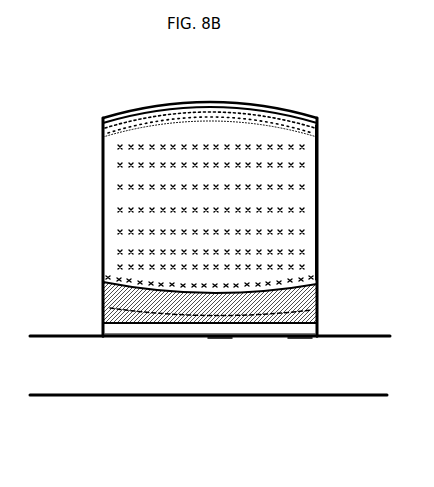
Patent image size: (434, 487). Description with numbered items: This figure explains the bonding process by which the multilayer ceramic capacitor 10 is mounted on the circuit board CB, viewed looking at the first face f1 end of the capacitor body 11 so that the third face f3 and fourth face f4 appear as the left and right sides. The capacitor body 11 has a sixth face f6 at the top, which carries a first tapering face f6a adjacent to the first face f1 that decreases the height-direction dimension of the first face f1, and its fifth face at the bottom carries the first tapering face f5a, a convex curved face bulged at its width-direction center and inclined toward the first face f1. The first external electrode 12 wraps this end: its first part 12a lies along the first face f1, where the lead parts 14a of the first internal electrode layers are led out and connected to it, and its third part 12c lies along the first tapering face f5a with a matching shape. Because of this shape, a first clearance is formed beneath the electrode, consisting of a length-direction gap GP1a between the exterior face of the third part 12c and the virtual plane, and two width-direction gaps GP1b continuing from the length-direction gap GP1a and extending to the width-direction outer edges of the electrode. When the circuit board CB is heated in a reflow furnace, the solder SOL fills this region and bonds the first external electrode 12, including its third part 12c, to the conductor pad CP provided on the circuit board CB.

The multilayer ceramic capacitor 10 is at (123, 109).
The capacitor body 11 is at (168, 104).
The first external electrode 12 is at (103, 170).
The first part 12a is at (137, 202).
The third part 12c is at (152, 338).
The lead part 14a is at (249, 98).
The first face f1 is at (262, 172).
The third face f3 is at (317, 242).
The fourth face f4 is at (103, 243).
The sixth face f6 is at (204, 101).
The first tapering face f6a is at (280, 108).
The first tapering face f5a is at (300, 338).
The length-direction gap GP1a is at (218, 338).
The width-direction gaps GP1b is at (102, 314).
The circuit board CB is at (63, 380).
The conductor pad CP is at (190, 338).
The solder SOL is at (117, 338).